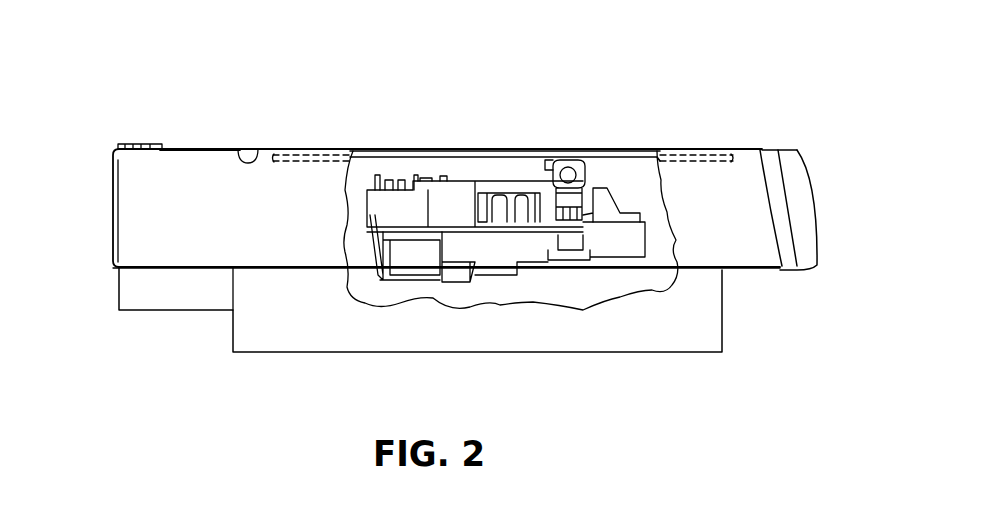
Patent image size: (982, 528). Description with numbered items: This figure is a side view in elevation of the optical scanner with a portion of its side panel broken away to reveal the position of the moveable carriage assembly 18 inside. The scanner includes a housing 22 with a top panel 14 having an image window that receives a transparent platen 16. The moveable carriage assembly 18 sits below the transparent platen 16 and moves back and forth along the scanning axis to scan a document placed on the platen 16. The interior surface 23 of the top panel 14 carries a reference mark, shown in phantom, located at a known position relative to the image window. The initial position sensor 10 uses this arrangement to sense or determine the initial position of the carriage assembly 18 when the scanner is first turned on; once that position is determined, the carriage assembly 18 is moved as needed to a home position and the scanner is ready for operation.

The initial position sensor 10 is at (128, 88).
The top panel 14 is at (206, 149).
The transparent platen 16 is at (414, 157).
The moveable carriage assembly 18 is at (645, 242).
The housing 22 is at (745, 150).
The interior surface 23 is at (258, 149).